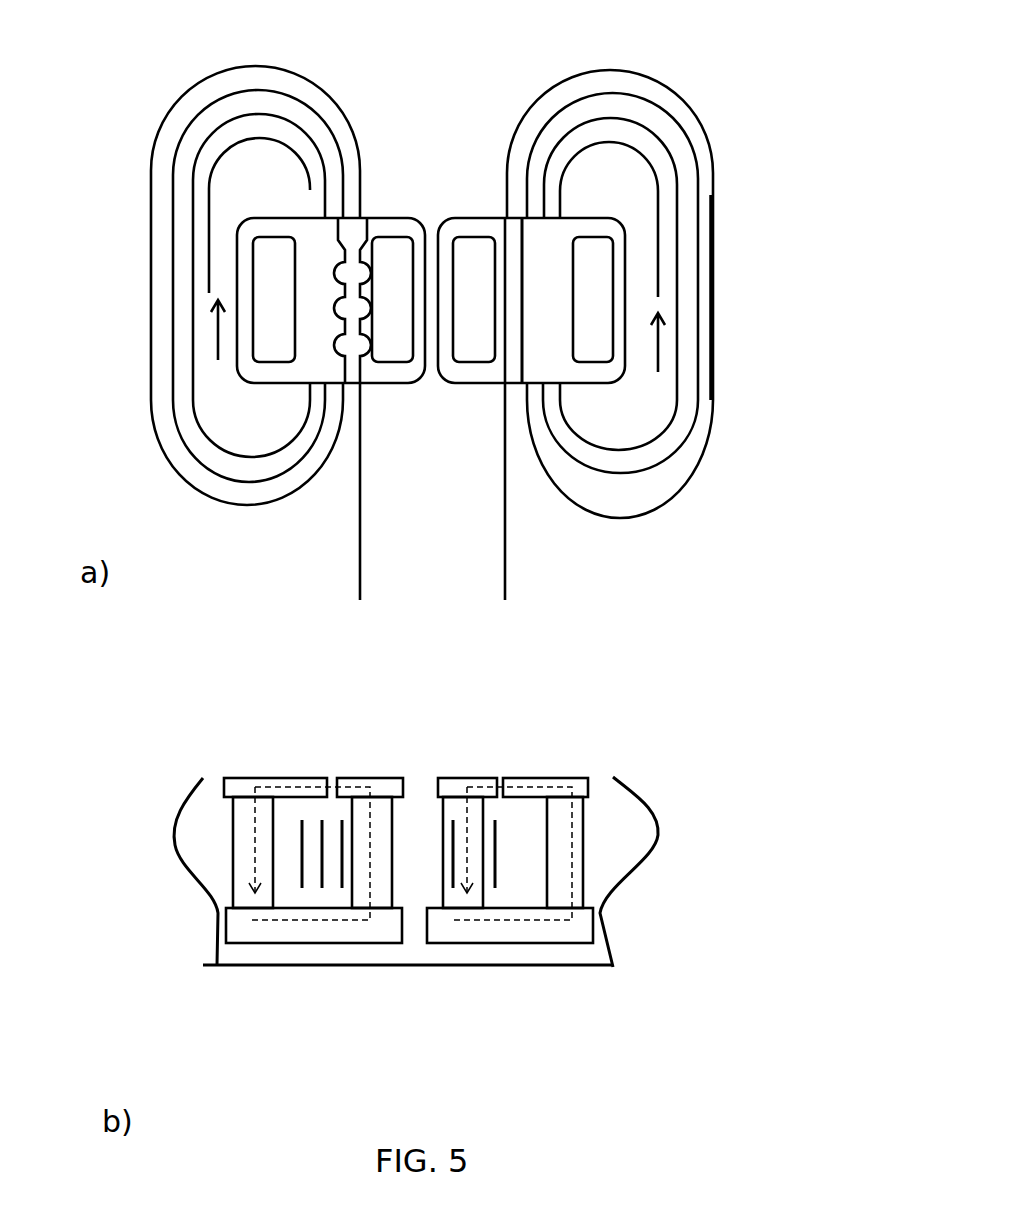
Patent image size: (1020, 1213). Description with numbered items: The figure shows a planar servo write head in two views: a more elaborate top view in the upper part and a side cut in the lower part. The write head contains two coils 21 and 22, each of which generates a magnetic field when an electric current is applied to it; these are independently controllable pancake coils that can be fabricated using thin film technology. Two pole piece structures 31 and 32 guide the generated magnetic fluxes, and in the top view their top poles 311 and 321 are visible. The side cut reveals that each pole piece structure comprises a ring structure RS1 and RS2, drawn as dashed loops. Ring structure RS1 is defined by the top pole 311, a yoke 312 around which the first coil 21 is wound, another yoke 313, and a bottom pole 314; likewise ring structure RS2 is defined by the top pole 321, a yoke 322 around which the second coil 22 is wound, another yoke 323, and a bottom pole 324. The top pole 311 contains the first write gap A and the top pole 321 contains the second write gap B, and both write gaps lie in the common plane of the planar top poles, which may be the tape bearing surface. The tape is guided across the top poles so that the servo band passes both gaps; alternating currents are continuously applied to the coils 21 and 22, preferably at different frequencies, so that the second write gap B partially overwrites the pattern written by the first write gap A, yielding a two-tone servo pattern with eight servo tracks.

The first coil 21 is at (537, 108).
The second coil 22 is at (332, 102).
The first pole piece structure 31 is at (626, 213).
The top pole 311 is at (545, 295).
The yoke 312 is at (613, 347).
The yoke 313 is at (468, 270).
The bottom pole 314 is at (598, 932).
The second pole piece structure 32 is at (271, 207).
The top pole 321 is at (248, 322).
The yoke 322 is at (262, 270).
The yoke 323 is at (393, 235).
The bottom pole 324 is at (268, 935).
The first write gap A is at (510, 345).
The second write gap B is at (359, 382).
The ring structure RS1 is at (570, 885).
The ring structure RS2 is at (255, 833).